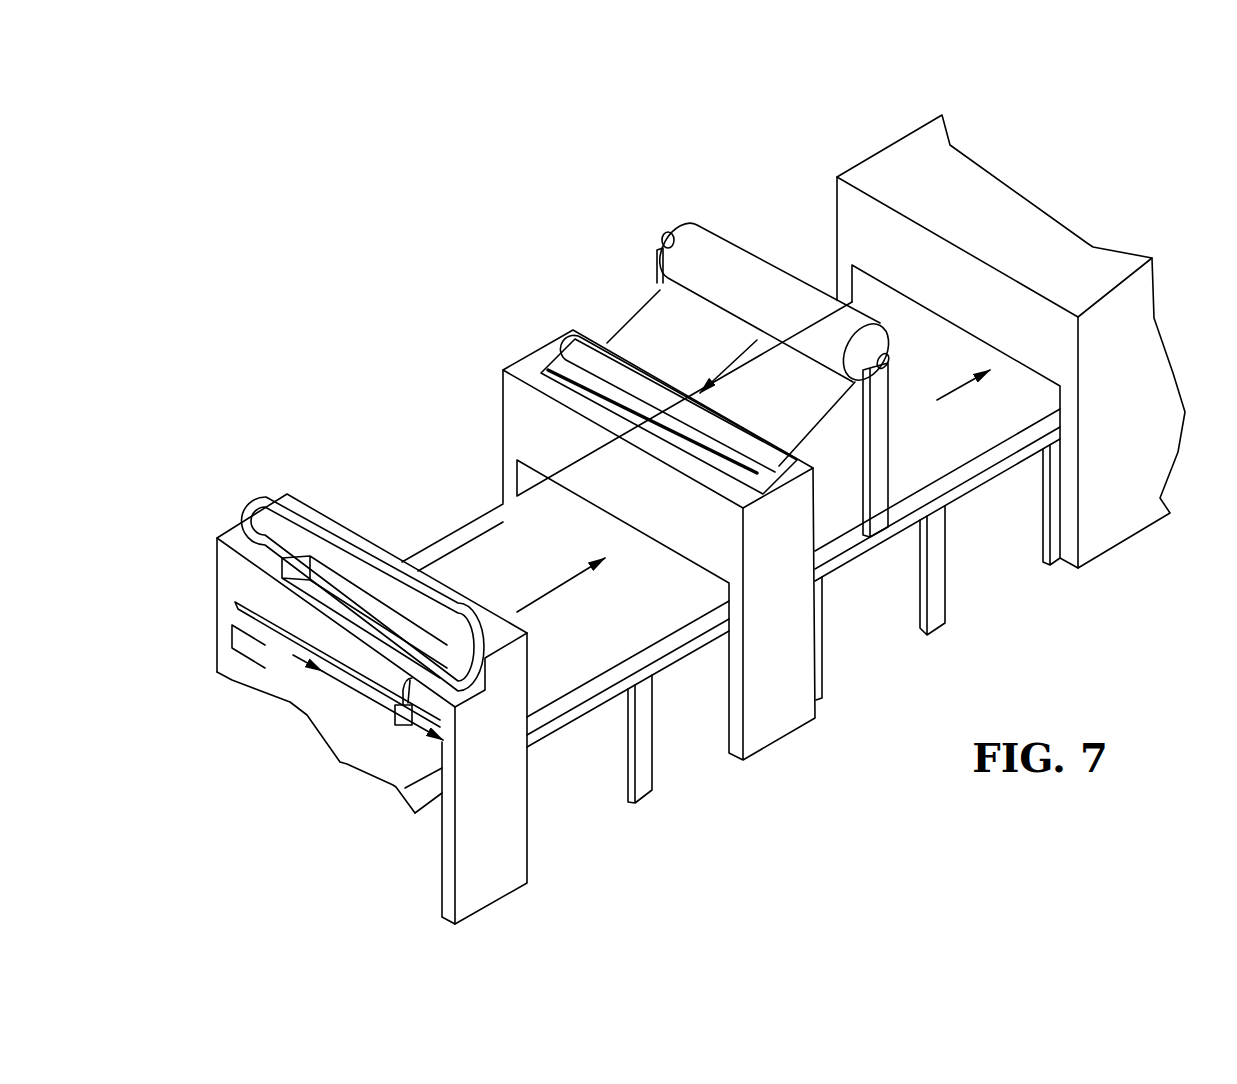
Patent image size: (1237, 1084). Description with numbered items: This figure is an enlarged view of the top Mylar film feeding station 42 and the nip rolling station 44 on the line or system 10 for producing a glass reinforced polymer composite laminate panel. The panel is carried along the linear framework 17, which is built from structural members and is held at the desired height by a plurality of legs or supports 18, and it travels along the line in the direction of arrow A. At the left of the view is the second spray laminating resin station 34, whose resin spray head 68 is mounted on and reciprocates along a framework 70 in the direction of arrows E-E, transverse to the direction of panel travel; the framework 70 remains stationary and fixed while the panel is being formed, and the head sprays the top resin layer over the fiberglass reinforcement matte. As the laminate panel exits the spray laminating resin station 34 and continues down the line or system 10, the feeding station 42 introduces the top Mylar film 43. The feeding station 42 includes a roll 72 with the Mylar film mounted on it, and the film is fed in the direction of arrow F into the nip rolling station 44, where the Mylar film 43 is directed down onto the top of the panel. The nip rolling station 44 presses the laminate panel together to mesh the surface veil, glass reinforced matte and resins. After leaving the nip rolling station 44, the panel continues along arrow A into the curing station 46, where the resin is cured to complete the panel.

The line or system 10 is at (696, 158).
The linear framework 17 is at (570, 728).
The legs or supports 18 is at (642, 790).
The spray laminating resin station 34 is at (363, 679).
The feeding station 42 is at (777, 344).
The top Mylar film 43 is at (650, 322).
The nip rolling station 44 is at (512, 353).
The curing station 46 is at (878, 148).
The resin spray head 68 is at (491, 778).
The framework 70 is at (485, 892).
The roll 72 is at (764, 276).